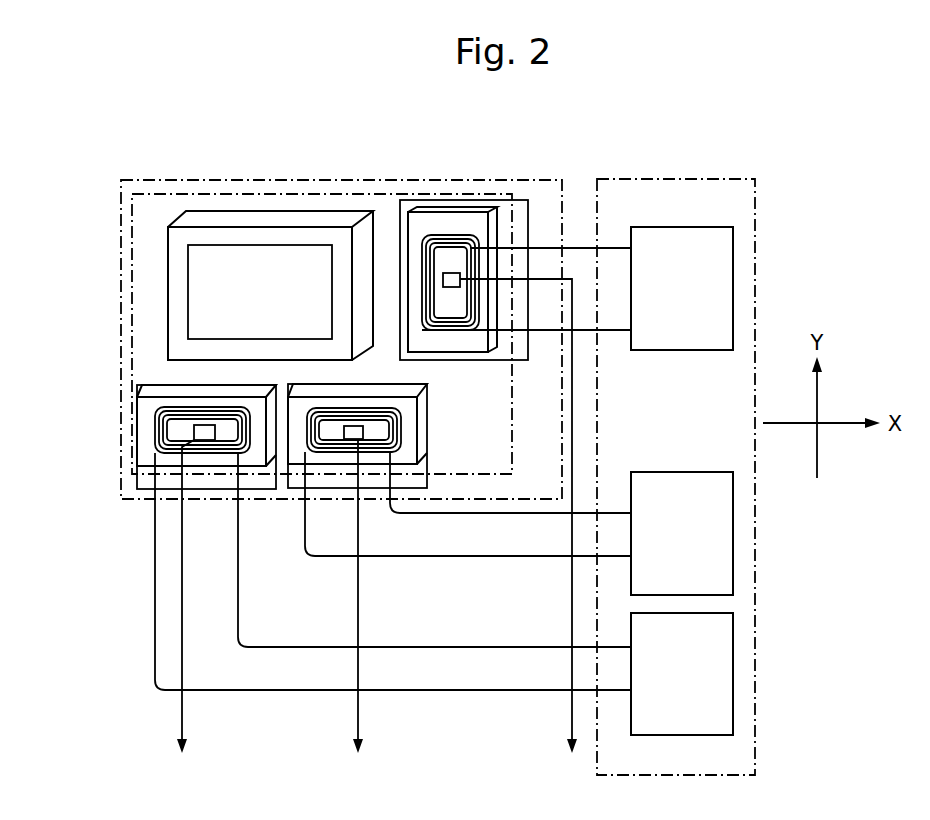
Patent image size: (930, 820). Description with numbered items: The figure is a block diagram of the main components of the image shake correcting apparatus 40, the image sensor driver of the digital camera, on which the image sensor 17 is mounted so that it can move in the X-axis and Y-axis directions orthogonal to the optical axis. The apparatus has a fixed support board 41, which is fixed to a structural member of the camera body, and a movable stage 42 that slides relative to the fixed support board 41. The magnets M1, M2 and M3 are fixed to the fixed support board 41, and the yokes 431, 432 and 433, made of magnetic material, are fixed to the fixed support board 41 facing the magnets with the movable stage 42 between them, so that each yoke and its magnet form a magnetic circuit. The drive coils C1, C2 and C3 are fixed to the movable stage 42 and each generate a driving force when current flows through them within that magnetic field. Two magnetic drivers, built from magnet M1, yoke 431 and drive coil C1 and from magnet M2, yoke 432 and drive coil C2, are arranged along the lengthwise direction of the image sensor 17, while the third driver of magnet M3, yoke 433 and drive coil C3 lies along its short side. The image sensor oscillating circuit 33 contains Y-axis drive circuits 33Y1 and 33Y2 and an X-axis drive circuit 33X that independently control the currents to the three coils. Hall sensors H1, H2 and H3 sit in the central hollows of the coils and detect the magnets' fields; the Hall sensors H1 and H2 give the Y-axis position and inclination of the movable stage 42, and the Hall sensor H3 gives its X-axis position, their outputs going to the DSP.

The image shake correcting apparatus 40 is at (380, 166).
The movable stage 42 is at (140, 195).
The fixed support board 41 is at (208, 180).
The image sensor 17 is at (273, 237).
The magnet M1 is at (150, 390).
The drive coil C1 is at (155, 428).
The Hall sensor H1 is at (200, 440).
The yoke 431 is at (136, 488).
The magnet M2 is at (427, 414).
The drive coil C2 is at (403, 437).
The Hall sensor H2 is at (348, 440).
The yoke 432 is at (377, 485).
The magnet M3 is at (446, 205).
The drive coil C3 is at (462, 235).
The Hall sensor H3 is at (452, 285).
The yoke 433 is at (521, 225).
The image sensor oscillating circuit 33 is at (668, 178).
The X-axis drive circuit 33X is at (733, 282).
The Y-axis drive circuit 33Y2 is at (733, 536).
The Y-axis drive circuit 33Y1 is at (733, 671).